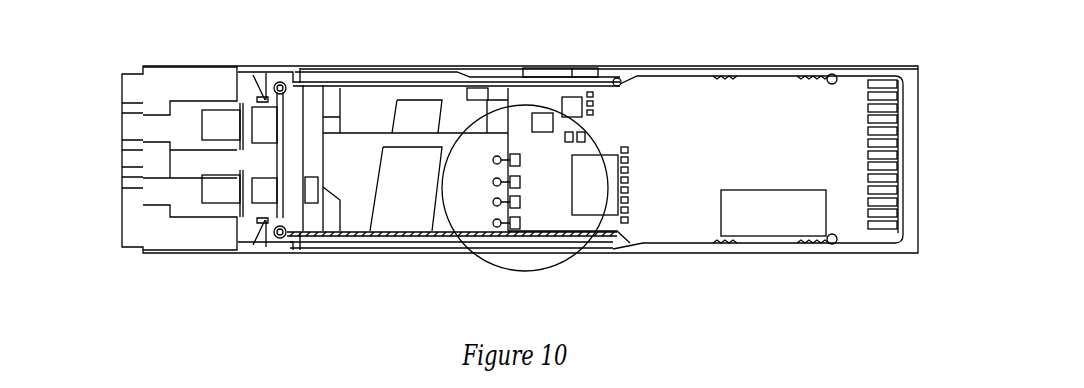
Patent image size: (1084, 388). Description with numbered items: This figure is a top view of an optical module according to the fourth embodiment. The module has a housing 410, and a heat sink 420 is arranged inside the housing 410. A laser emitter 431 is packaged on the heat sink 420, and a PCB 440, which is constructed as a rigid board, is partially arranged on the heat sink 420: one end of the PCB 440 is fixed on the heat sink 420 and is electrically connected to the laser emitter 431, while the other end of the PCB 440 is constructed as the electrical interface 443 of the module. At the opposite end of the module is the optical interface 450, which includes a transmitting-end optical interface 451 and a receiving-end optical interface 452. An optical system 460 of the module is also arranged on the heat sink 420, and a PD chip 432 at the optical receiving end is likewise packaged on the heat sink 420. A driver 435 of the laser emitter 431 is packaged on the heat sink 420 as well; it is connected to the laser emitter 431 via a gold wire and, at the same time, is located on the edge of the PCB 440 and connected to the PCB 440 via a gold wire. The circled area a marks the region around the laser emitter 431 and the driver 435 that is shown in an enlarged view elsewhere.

The housing 410 is at (852, 255).
The heat sink 420 is at (378, 95).
The laser emitter 431 is at (517, 227).
The PD chip 432 is at (478, 107).
The driver 435 is at (548, 232).
The PCB 440 is at (660, 95).
The electrical interface 443 is at (887, 93).
The optical interface 450 is at (122, 118).
The transmitting-end optical interface 451 is at (228, 190).
The receiving-end optical interface 452 is at (226, 120).
The optical system 460 is at (397, 207).
The area a is at (533, 105).